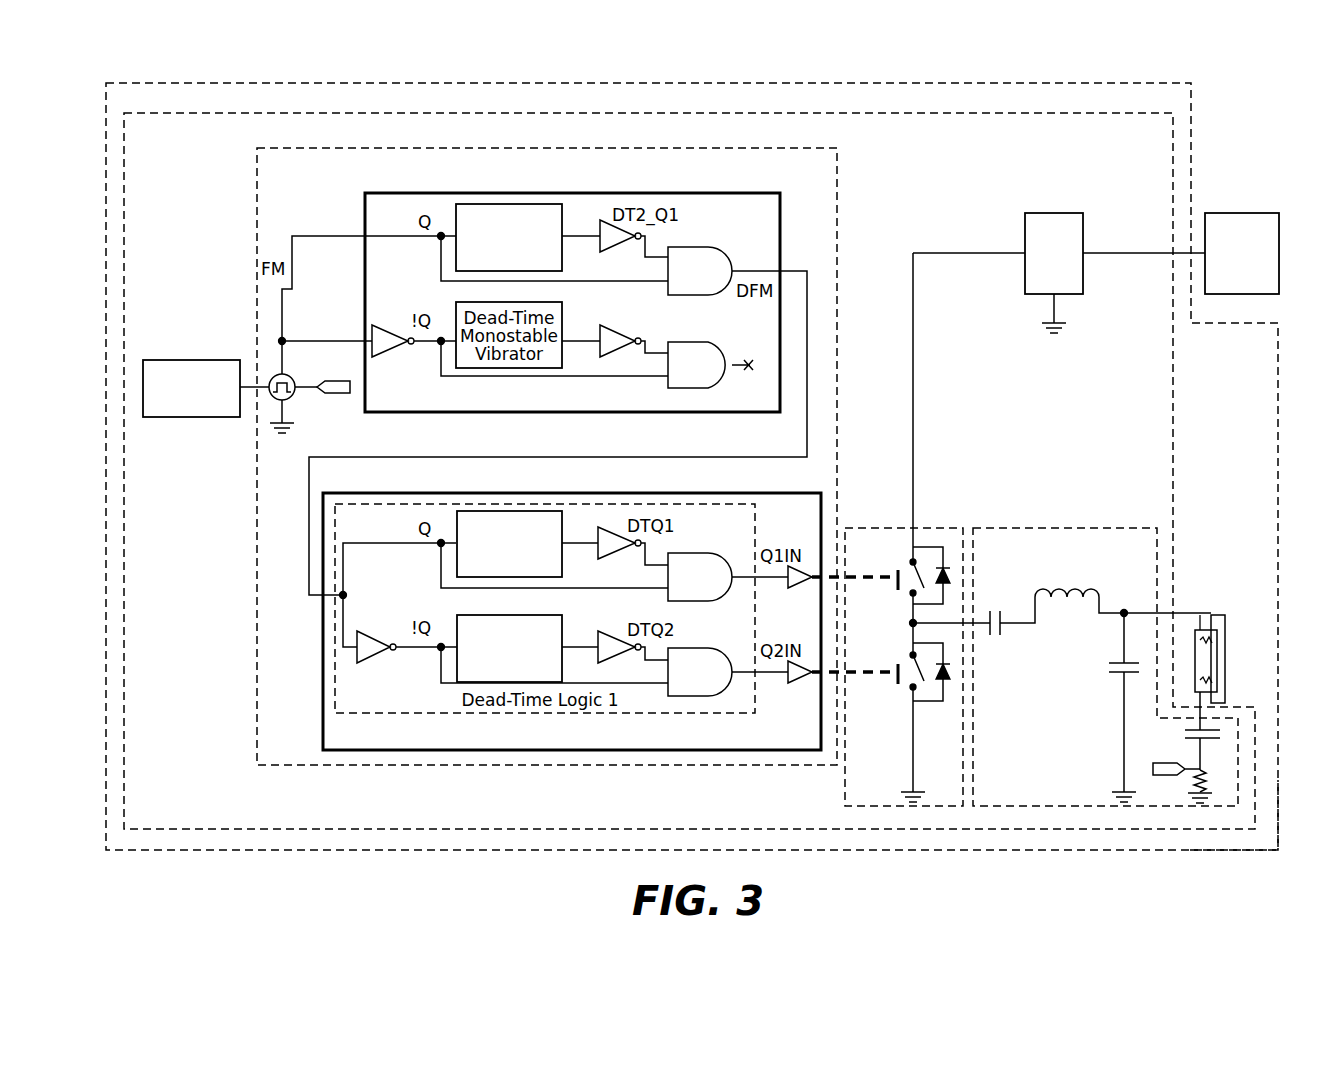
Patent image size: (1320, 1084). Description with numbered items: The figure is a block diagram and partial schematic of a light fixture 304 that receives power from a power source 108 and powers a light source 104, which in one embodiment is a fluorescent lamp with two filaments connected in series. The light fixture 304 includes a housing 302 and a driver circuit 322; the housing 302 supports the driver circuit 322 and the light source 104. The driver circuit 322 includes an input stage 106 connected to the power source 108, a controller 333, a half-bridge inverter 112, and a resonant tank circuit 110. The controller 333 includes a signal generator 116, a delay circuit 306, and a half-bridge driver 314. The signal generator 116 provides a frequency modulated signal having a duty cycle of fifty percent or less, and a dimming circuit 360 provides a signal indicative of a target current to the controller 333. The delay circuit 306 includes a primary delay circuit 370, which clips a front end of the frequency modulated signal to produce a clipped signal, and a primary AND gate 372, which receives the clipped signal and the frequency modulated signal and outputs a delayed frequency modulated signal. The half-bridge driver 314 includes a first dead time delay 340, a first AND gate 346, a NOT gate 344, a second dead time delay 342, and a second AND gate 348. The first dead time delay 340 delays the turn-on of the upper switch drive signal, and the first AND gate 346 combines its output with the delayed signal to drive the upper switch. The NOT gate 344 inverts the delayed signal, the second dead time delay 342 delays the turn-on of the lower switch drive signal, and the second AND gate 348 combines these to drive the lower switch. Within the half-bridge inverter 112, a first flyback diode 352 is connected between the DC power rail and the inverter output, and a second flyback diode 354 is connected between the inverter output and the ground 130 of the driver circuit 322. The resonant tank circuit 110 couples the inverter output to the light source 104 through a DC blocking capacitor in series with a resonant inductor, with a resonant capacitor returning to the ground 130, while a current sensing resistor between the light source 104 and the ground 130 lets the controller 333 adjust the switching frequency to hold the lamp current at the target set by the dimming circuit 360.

The housing 302 is at (515, 851).
The light fixture 304 is at (1234, 874).
The driver circuit 322 is at (545, 828).
The controller 333 is at (773, 766).
The delay circuit 306 is at (572, 412).
The primary delay circuit 370 is at (510, 203).
The primary AND gate 372 is at (695, 247).
The dimming circuit 360 is at (160, 360).
The signal generator 116 is at (291, 398).
The ground 130 is at (289, 427).
The half-bridge driver 314 is at (678, 752).
The first dead time delay 340 is at (512, 510).
The second dead time delay 342 is at (462, 614).
The NOT gate 344 is at (372, 663).
The first AND gate 346 is at (688, 553).
The second AND gate 348 is at (688, 648).
The half-bridge inverter 112 is at (890, 527).
The first flyback diode 352 is at (950, 565).
The second flyback diode 354 is at (951, 688).
The input stage 106 is at (1054, 213).
The power source 108 is at (1215, 213).
The resonant tank circuit 110 is at (1110, 527).
The light source 104 is at (1240, 634).